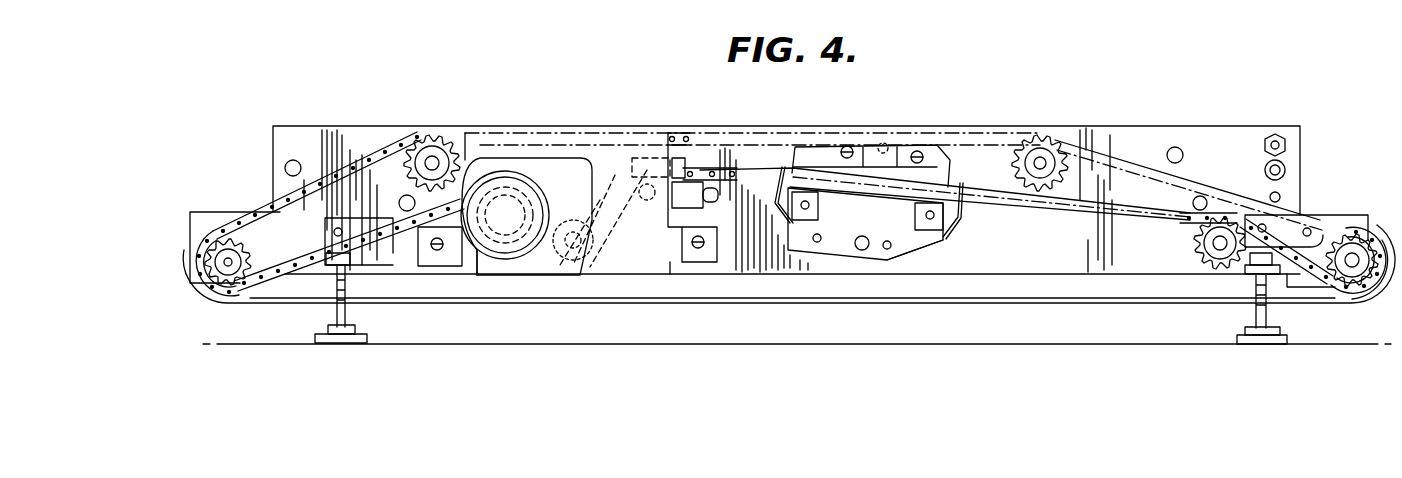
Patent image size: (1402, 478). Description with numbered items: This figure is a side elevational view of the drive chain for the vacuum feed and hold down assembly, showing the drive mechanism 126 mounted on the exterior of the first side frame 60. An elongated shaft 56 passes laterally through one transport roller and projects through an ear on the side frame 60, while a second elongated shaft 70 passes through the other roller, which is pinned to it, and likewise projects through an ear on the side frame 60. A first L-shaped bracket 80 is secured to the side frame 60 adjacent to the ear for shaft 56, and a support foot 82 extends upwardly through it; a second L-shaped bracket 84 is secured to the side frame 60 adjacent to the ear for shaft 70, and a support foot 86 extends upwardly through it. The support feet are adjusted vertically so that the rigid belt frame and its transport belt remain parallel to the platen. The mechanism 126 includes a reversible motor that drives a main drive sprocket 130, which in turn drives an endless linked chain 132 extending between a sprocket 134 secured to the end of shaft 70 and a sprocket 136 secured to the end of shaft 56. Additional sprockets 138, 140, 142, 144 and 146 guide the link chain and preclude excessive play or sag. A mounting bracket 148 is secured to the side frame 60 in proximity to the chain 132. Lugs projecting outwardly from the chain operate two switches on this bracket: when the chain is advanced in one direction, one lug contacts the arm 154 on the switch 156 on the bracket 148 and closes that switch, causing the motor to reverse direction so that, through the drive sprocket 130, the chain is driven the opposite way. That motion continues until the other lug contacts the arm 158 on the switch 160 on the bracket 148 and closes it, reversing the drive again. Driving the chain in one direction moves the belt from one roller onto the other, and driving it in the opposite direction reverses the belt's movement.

The elongated shaft 56 is at (1352, 267).
The first side frame 60 is at (1200, 140).
The elongated shaft 70 is at (225, 253).
The first L-shaped bracket 80 is at (1280, 228).
The support foot 82 is at (1255, 313).
The second L-shaped bracket 84 is at (380, 243).
The support foot 86 is at (330, 309).
The mechanism 126 is at (470, 268).
The main drive sprocket 130 is at (510, 240).
The endless linked chain 132 is at (735, 140).
The sprocket 134 is at (260, 237).
The sprocket 136 is at (1328, 233).
The sprocket 138 is at (1193, 250).
The sprocket 140 is at (1065, 162).
The sprocket 142 is at (617, 228).
The sprocket 144 is at (527, 215).
The sprocket 146 is at (428, 142).
The mounting bracket 148 is at (882, 225).
The arm 154 is at (965, 180).
The switch 156 is at (943, 240).
The arm 158 is at (778, 170).
The switch 160 is at (803, 218).